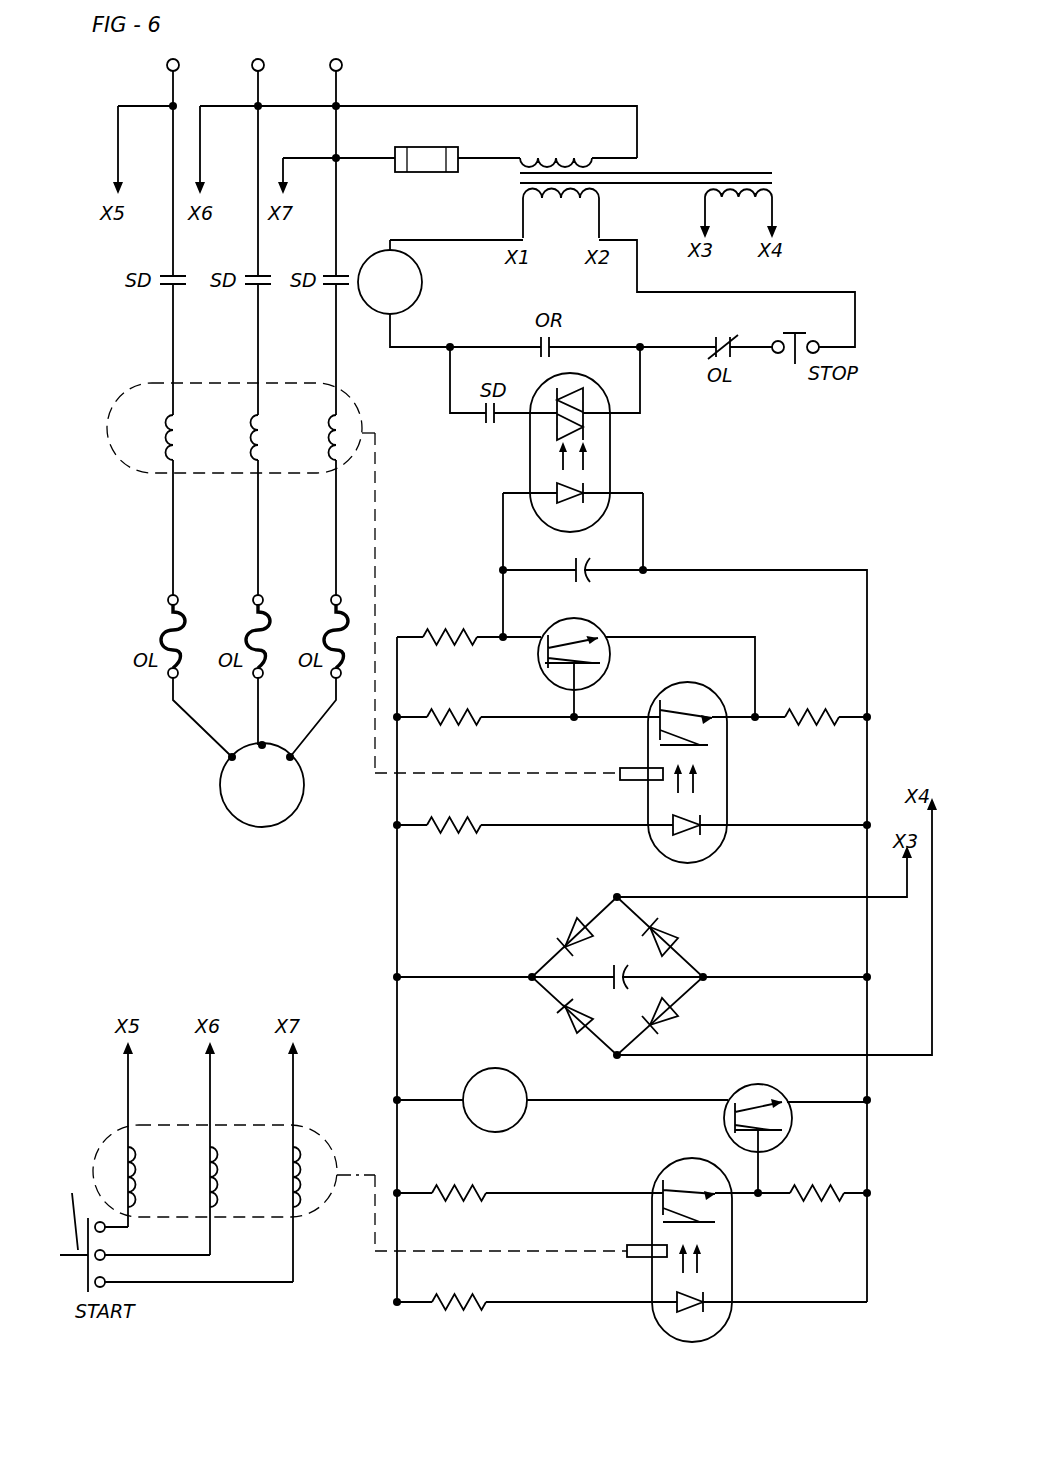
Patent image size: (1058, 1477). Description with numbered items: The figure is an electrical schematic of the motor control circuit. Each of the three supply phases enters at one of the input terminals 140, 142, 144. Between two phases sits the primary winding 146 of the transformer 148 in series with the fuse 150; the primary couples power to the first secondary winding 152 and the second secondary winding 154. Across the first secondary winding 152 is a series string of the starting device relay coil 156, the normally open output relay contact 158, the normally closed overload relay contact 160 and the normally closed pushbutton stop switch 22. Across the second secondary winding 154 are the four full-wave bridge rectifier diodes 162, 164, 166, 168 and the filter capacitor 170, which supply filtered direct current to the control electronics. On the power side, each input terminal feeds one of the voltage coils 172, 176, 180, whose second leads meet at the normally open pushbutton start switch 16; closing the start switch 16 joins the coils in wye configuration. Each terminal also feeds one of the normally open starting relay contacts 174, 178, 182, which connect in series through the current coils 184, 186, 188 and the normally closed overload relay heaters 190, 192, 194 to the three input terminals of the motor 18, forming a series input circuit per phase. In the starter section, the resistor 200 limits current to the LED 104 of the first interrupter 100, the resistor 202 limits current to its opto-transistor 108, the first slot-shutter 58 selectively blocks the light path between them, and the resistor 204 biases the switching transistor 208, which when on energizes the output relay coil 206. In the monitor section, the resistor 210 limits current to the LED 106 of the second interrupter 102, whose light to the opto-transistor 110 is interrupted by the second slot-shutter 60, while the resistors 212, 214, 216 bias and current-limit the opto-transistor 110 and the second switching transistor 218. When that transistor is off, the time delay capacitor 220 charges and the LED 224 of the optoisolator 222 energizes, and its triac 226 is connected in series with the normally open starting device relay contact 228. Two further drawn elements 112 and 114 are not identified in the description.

The first input terminal 140 is at (166, 66).
The second input terminal 142 is at (256, 69).
The third input terminal 144 is at (330, 68).
The primary winding 146 is at (538, 156).
The transformer 148 is at (706, 172).
The fuse 150 is at (400, 146).
The first secondary winding 152 is at (556, 212).
The second secondary winding 154 is at (750, 210).
The starting device relay coil 156 is at (423, 282).
The normally open output relay contact 158 is at (574, 340).
The normally closed overload relay contact 160 is at (718, 344).
The pushbutton stop switch 22 is at (794, 364).
The first normally open starting relay contact 174 is at (166, 292).
The second normally open starting relay contact 178 is at (254, 292).
The third normally open starting relay contact 182 is at (340, 292).
The first current coil 184 is at (162, 420).
The second current coil 186 is at (250, 430).
The third current coil 188 is at (330, 430).
The first overload relay heater 190 is at (172, 622).
The second overload relay heater 192 is at (258, 622).
The third overload relay heater 194 is at (336, 623).
The motor 18 is at (220, 790).
The pushbutton start switch 16 is at (84, 1176).
The first voltage coil 172 is at (136, 1178).
The second voltage coil 176 is at (218, 1180).
The third voltage coil 180 is at (302, 1162).
The resistor 200 is at (466, 1300).
The resistor 202 is at (456, 1184).
The resistor 204 is at (810, 1202).
The output relay coil 206 is at (515, 1124).
The switching transistor 208 is at (724, 1122).
The resistor 210 is at (456, 822).
The resistor 212 is at (454, 710).
The resistor 214 is at (810, 700).
The resistor 216 is at (454, 630).
The second switching transistor 218 is at (595, 640).
The time delay capacitor 220 is at (590, 580).
The optoisolator 222 is at (612, 460).
The LED 224 is at (540, 490).
The triac 226 is at (606, 430).
The normally open starting device relay contact 228 is at (484, 418).
The second slot-shutter 60 is at (624, 765).
The first slot-shutter 58 is at (626, 1242).
The first interrupter 100 is at (732, 1262).
The second interrupter 102 is at (727, 778).
The LED 104 is at (662, 1314).
The LED 106 is at (662, 842).
The opto-transistor 108 is at (666, 1198).
The opto-transistor 110 is at (682, 702).
The sensor lead 112 is at (640, 1262).
The sensor lead 114 is at (640, 790).
The full-wave bridge rectifier diode 162 is at (556, 926).
The full-wave bridge rectifier diode 164 is at (680, 937).
The full-wave bridge rectifier diode 166 is at (566, 1022).
The full-wave bridge rectifier diode 168 is at (685, 1020).
The filter capacitor 170 is at (610, 978).